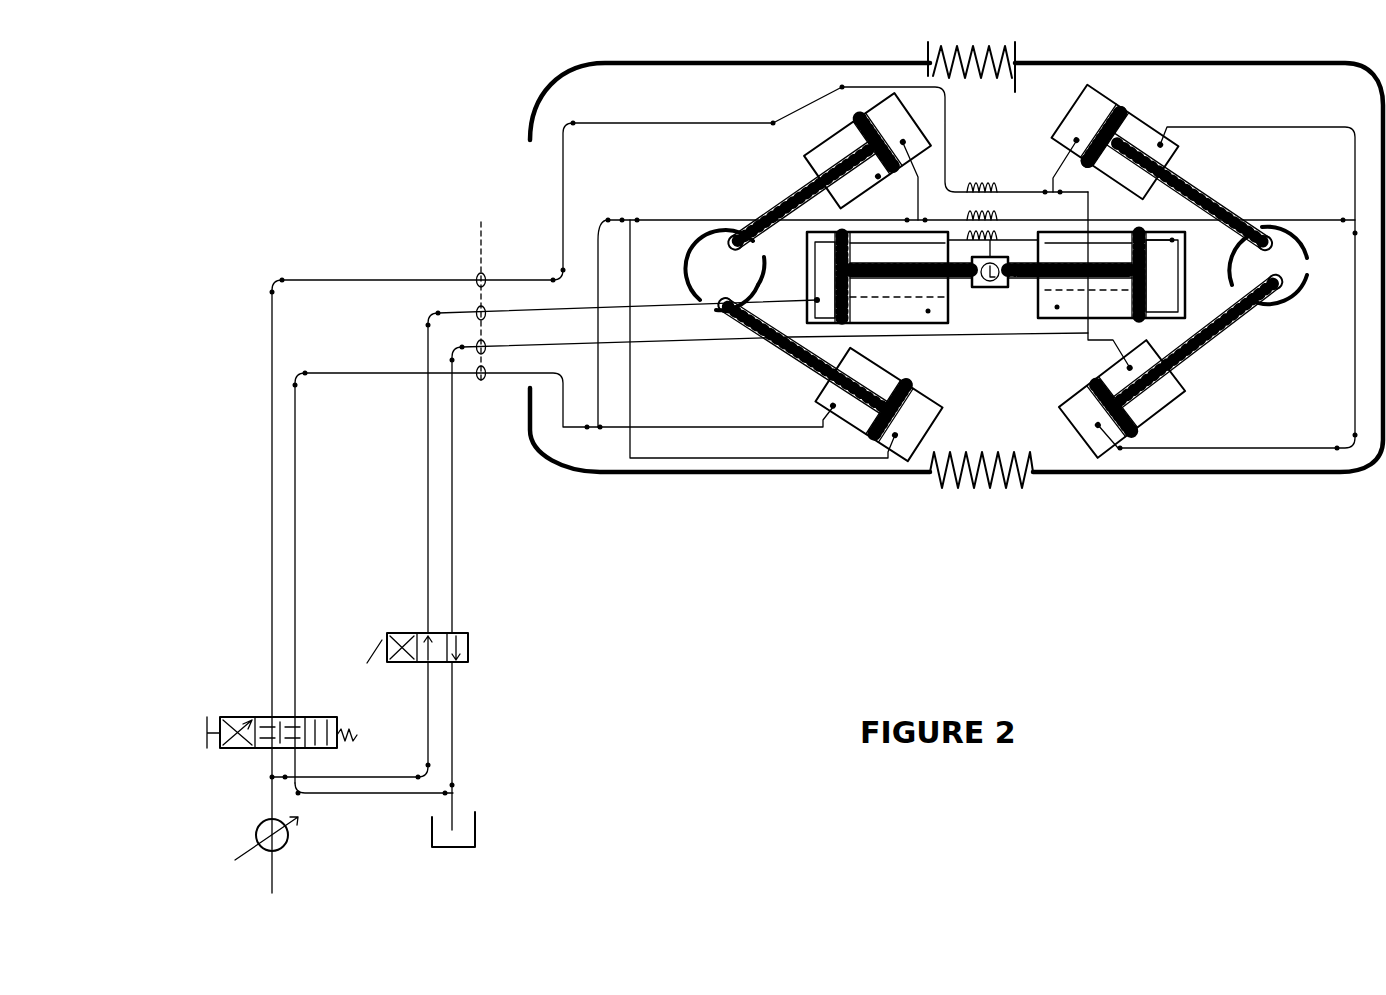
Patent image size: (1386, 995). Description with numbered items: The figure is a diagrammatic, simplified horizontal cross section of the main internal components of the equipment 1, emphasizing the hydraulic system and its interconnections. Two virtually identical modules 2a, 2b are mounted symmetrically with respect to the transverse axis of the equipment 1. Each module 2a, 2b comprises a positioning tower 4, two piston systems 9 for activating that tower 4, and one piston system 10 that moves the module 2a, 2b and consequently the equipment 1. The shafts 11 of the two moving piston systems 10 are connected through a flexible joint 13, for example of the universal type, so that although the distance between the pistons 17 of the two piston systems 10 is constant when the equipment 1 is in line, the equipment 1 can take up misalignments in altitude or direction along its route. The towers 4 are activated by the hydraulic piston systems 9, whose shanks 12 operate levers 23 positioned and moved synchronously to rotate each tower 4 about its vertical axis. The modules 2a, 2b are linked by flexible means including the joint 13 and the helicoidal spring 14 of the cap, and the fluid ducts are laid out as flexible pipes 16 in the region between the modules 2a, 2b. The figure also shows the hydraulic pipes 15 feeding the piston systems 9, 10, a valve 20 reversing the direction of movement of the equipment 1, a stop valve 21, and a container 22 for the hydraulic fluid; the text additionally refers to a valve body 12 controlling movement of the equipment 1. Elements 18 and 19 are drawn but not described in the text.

The equipment 1 is at (835, 643).
The module 2a is at (660, 547).
The module 2b is at (1235, 545).
The positioning tower 4 is at (993, 269).
The piston system 9 is at (1058, 117).
The piston system 10 is at (996, 277).
The shaft 11 is at (911, 276).
The shank 12 is at (1185, 175).
The flexible joint 13 is at (995, 292).
The helicoidal spring 14 is at (983, 495).
The hydraulic pipes 15 is at (814, 489).
The flexible pipes 16 is at (987, 176).
The piston 17 is at (1089, 265).
The piston 18 is at (1083, 85).
The directional valve 19 is at (473, 647).
The valve 20 is at (237, 700).
The stop valve 21 is at (287, 850).
The container 22 is at (482, 833).
The lever 23 is at (1227, 322).